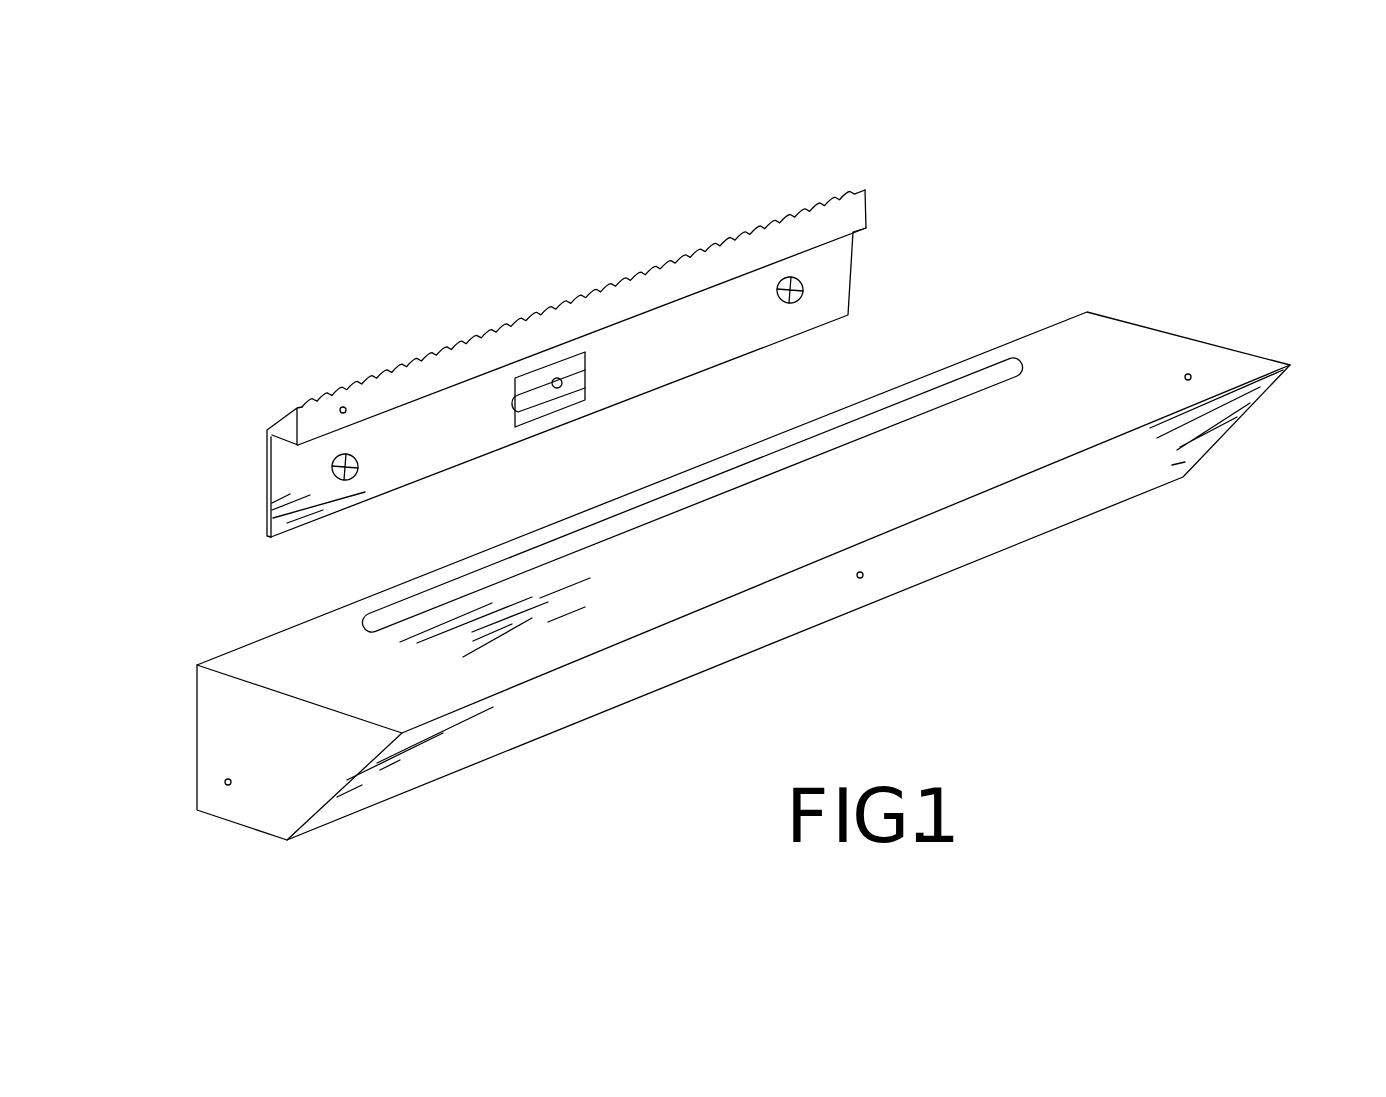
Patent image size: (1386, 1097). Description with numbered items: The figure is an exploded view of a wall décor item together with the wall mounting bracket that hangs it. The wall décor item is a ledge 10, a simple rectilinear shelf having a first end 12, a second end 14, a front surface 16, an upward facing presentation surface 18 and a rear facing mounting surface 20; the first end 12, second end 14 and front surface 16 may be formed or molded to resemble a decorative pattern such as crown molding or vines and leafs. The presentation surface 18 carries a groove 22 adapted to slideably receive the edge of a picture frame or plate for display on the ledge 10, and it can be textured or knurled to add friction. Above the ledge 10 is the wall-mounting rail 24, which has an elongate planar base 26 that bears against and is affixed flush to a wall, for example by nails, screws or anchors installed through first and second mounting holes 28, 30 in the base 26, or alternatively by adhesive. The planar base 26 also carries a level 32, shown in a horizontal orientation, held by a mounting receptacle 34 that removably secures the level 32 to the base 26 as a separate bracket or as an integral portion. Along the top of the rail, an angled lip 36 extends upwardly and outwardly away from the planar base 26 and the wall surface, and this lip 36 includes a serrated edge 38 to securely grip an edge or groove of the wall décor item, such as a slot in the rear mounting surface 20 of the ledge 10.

The ledge 10 is at (1178, 286).
The first end 12 is at (222, 790).
The second end 14 is at (1218, 440).
The front surface 16 is at (865, 578).
The presentation surface 18 is at (1192, 374).
The rear facing mounting surface 20 is at (189, 640).
The groove 22 is at (985, 370).
The wall-mounting rail 24 is at (666, 197).
The elongate planar base 26 is at (855, 255).
The first mounting hole 28 is at (343, 480).
The second mounting hole 30 is at (803, 288).
The level 32 is at (587, 370).
The mounting receptacle 34 is at (517, 420).
The angled lip 36 is at (345, 402).
The serrated edge 38 is at (460, 348).